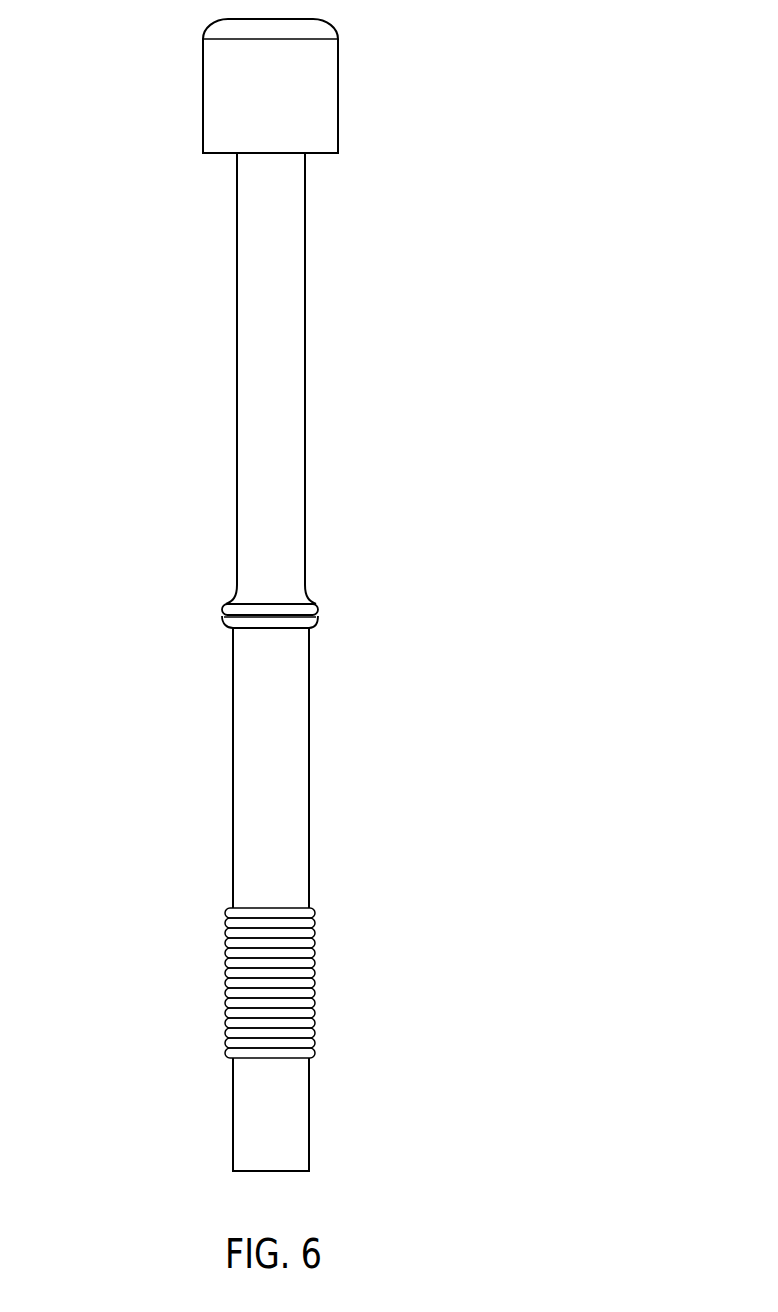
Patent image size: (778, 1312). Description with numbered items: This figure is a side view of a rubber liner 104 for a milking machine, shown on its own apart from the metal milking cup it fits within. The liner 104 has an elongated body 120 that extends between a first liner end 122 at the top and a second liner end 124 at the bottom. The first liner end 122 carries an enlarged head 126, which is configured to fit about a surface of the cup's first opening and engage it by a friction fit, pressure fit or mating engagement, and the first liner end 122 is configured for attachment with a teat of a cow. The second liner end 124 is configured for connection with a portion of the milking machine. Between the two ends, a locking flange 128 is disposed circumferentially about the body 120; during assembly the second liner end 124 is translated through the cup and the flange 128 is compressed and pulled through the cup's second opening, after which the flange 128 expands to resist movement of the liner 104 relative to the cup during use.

The rubber liner 104 is at (138, 222).
The elongated body 120 is at (298, 675).
The first liner end 122 is at (320, 155).
The second liner end 124 is at (297, 1163).
The head 126 is at (320, 90).
The locking flange 128 is at (317, 618).